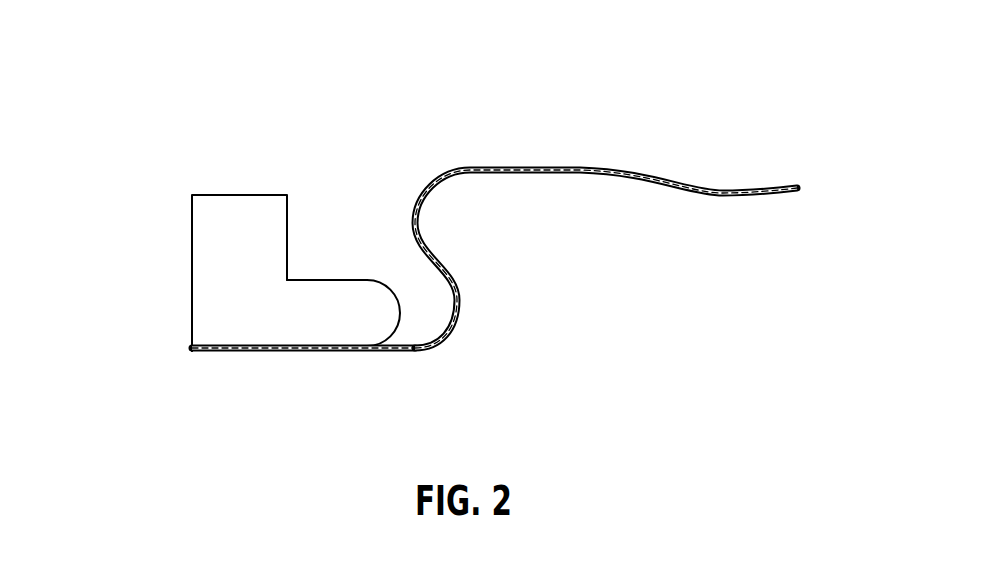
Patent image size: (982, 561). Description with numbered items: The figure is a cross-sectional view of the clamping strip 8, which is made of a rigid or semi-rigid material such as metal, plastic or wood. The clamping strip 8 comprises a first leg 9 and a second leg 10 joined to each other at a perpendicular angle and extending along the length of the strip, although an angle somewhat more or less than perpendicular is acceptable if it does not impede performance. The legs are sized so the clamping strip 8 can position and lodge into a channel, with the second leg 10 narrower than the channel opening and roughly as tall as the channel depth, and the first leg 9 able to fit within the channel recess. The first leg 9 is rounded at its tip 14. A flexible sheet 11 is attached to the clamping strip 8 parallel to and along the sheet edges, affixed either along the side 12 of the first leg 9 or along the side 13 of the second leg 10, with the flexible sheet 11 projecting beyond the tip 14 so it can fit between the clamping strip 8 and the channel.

The clamping strip 8 is at (318, 113).
The first leg 9 is at (342, 312).
The second leg 10 is at (230, 247).
The flexible sheet 11 is at (440, 212).
The side of leg 9 12 is at (276, 350).
The side of leg 10 13 is at (187, 297).
The tip 14 is at (382, 312).